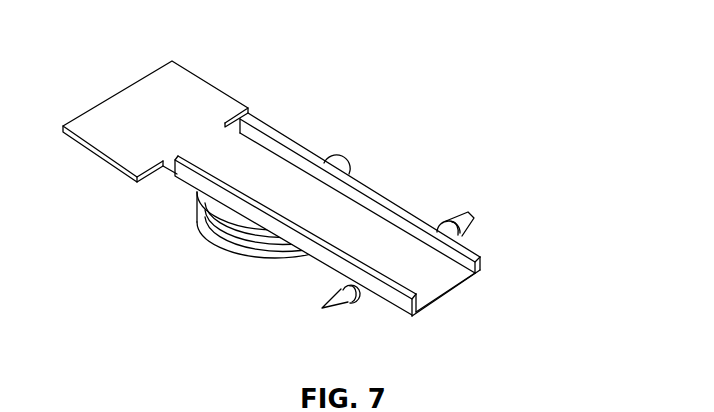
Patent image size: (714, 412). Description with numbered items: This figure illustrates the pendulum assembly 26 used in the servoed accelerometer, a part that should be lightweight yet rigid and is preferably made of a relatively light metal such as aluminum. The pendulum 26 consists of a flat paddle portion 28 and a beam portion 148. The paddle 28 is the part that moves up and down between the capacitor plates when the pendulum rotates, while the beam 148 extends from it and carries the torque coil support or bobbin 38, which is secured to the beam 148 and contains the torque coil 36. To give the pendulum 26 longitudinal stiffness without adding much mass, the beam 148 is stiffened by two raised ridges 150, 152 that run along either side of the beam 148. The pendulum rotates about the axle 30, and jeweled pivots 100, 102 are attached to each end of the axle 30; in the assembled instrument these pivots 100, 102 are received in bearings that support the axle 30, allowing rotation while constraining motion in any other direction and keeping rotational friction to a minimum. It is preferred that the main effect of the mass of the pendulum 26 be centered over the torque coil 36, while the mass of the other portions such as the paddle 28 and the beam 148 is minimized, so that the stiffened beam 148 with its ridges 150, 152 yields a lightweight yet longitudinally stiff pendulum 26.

The pendulum assembly 26 is at (312, 119).
The paddle portion 28 is at (185, 85).
The beam portion 148 is at (318, 188).
The raised ridge 150 is at (392, 200).
The raised ridge 152 is at (323, 260).
The torque coil support or bobbin 38 is at (212, 207).
The torque coil 36 is at (202, 230).
The jeweled pivot 100 is at (472, 216).
The jeweled pivot 102 is at (333, 308).
The axle 30 is at (360, 293).